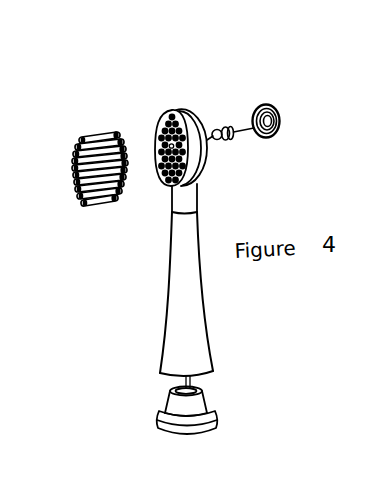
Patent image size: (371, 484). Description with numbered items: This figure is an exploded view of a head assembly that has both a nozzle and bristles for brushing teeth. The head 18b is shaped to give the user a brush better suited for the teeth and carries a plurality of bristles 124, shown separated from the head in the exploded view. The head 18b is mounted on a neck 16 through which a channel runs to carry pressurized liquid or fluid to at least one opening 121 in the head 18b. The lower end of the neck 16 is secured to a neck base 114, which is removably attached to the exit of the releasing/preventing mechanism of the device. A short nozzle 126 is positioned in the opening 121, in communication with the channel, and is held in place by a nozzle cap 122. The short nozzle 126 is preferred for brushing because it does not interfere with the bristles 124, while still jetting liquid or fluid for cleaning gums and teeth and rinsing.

The bristles 124 is at (102, 134).
The head 18b is at (184, 109).
The opening 121 is at (163, 166).
The short nozzle 126 is at (226, 141).
The nozzle cap 122 is at (280, 117).
The neck 16 is at (207, 349).
The neck base 114 is at (200, 400).